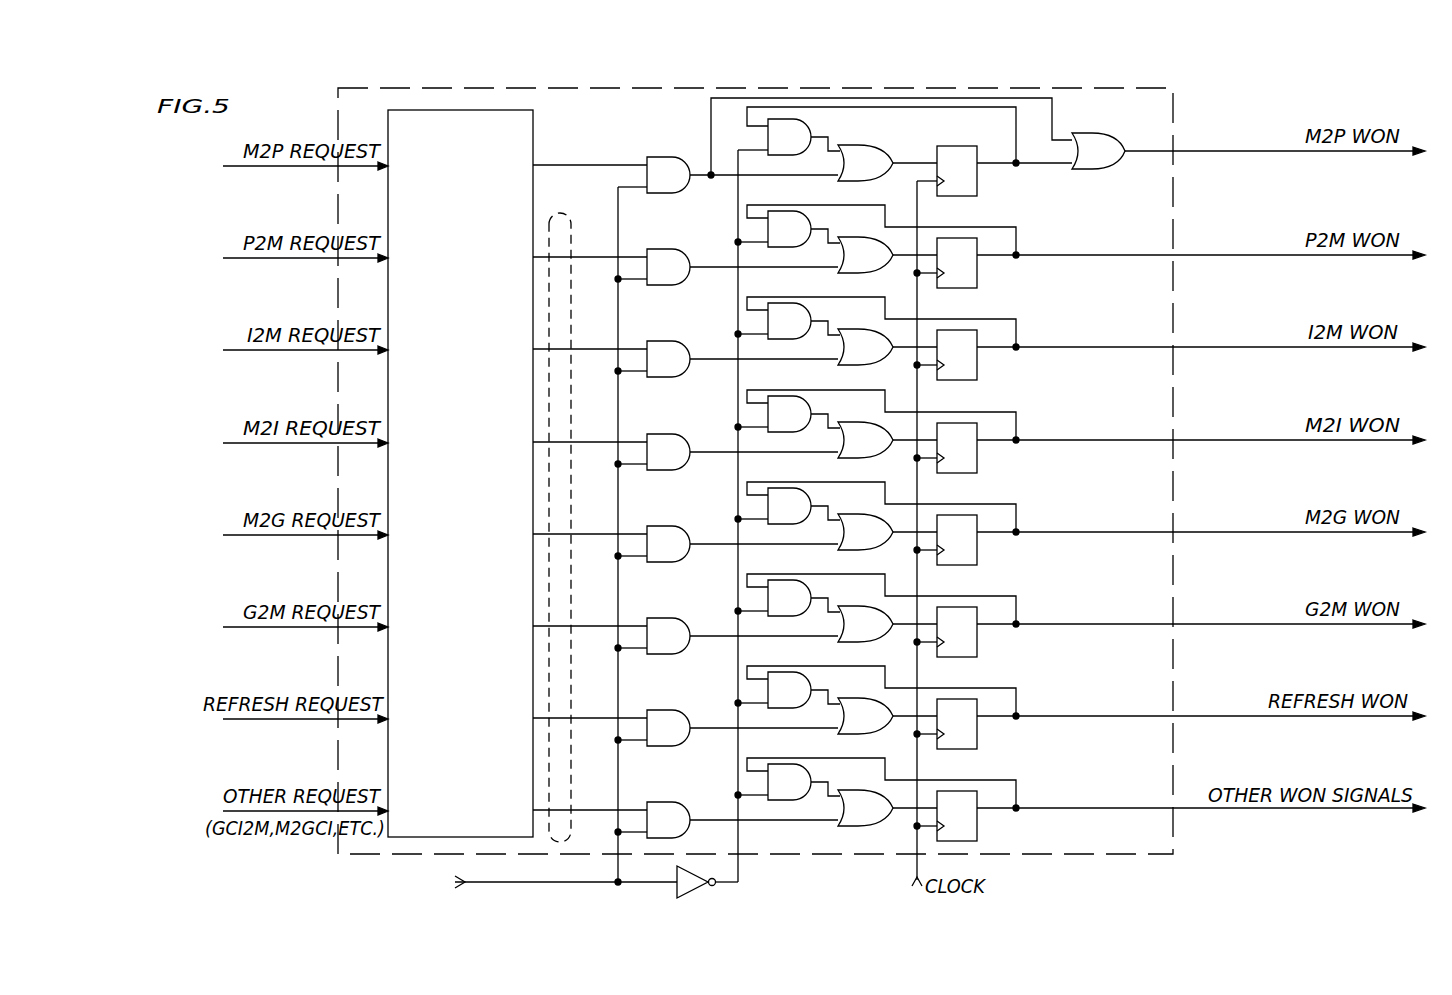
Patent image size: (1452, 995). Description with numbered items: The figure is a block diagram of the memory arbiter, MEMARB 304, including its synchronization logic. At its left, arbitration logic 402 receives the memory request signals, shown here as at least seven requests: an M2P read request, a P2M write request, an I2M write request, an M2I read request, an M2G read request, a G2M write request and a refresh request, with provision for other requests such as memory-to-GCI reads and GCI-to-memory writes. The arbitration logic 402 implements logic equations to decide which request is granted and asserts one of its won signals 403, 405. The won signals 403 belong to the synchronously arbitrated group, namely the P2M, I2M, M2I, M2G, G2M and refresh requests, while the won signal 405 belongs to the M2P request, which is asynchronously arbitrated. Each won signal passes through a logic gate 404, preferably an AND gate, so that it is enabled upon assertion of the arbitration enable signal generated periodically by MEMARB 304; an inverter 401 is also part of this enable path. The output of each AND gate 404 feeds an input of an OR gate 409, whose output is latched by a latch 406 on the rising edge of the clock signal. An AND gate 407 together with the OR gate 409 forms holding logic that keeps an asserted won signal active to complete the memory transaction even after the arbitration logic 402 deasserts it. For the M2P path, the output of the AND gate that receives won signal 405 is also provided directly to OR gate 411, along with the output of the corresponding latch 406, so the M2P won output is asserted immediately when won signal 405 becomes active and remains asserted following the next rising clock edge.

The MEMARB 304 is at (1134, 111).
The inverter 401 is at (696, 892).
The arbitration logic 402 is at (481, 532).
The won signals 403 is at (573, 228).
The logic gates 404 is at (688, 185).
The won signal 405 is at (553, 166).
The latches 406 is at (941, 146).
The AND gate 407 is at (809, 147).
The OR gate 409 is at (889, 173).
The OR gate 411 is at (1090, 169).